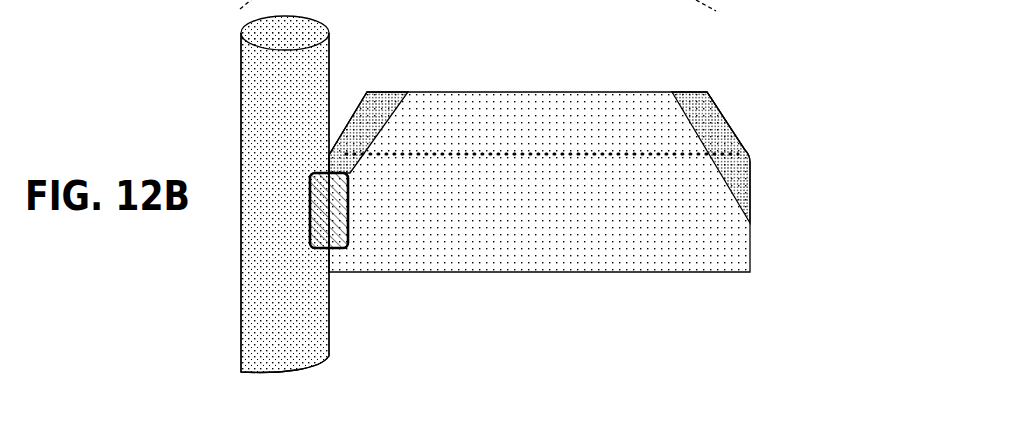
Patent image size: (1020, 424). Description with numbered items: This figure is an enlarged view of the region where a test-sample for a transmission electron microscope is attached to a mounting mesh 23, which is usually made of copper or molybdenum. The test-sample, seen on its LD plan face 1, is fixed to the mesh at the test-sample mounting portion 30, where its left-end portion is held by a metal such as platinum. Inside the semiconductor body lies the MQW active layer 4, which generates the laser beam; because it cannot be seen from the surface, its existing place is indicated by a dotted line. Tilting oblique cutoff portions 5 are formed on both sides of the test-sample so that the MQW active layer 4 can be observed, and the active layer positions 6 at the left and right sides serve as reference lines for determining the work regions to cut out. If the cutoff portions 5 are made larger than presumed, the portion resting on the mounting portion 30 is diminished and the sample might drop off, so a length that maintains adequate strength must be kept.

The LD plan face 1 is at (556, 272).
The MQW active layer 4 is at (492, 157).
The tilting oblique cutoff portions 5 is at (725, 130).
The active layer positions 6 is at (345, 153).
The mounting mesh 23 is at (318, 67).
The test-sample mounting portion 30 is at (333, 233).